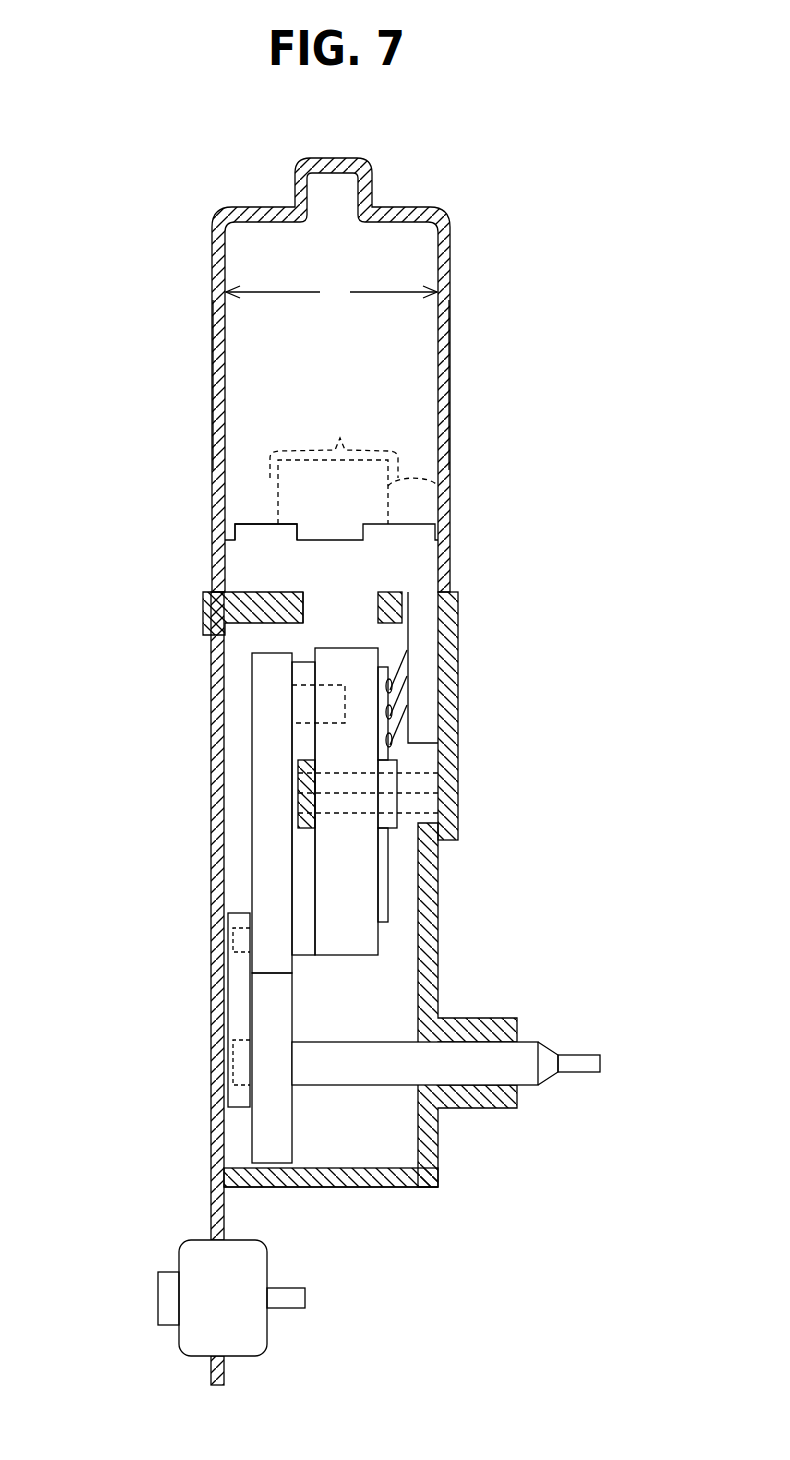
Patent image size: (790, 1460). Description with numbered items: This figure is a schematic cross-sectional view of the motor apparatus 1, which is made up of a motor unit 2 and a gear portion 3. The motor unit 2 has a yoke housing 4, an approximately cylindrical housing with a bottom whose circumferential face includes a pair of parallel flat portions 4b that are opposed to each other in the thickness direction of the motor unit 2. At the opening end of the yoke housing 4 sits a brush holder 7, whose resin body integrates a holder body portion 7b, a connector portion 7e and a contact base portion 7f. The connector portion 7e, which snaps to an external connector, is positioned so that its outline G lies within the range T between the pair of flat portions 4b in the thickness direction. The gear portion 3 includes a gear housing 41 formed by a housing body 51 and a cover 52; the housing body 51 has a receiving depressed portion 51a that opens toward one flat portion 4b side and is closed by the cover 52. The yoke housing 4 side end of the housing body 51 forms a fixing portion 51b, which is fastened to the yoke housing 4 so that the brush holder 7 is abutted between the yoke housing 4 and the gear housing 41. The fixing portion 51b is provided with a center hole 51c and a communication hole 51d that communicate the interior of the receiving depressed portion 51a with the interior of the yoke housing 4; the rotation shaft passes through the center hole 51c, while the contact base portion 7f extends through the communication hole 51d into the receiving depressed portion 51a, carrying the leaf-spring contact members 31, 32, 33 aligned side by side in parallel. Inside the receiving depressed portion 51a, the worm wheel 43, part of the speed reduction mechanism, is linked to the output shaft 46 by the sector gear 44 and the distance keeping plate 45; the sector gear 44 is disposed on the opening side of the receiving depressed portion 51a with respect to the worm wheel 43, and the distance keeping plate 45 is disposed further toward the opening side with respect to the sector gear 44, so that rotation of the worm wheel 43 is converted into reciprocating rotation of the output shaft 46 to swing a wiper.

The motor apparatus 1 is at (70, 575).
The motor unit 2 is at (122, 561).
The gear portion 3 is at (120, 657).
The yoke housing 4 is at (450, 226).
The flat portions 4b is at (213, 385).
The brush holder 7 is at (420, 517).
The holder body portion 7b is at (252, 526).
The connector portion 7e is at (440, 488).
The contact base portion 7f is at (452, 618).
The contact member 31 is at (405, 666).
The contact member 32 is at (405, 692).
The contact member 33 is at (405, 719).
The gear housing 41 is at (140, 1130).
The worm wheel 43 is at (344, 950).
The sector gear 44 is at (268, 865).
The distance keeping plate 45 is at (235, 1000).
The output shaft 46 is at (344, 1078).
The housing body 51 is at (245, 1180).
The receiving depressed portion 51a is at (356, 1165).
The fixing portion 51b is at (204, 610).
The center hole 51c is at (304, 612).
The communication hole 51d is at (408, 598).
The cover 52 is at (213, 1138).
The range between the flat portions T is at (331, 293).
The outline of the connector portion G is at (340, 436).